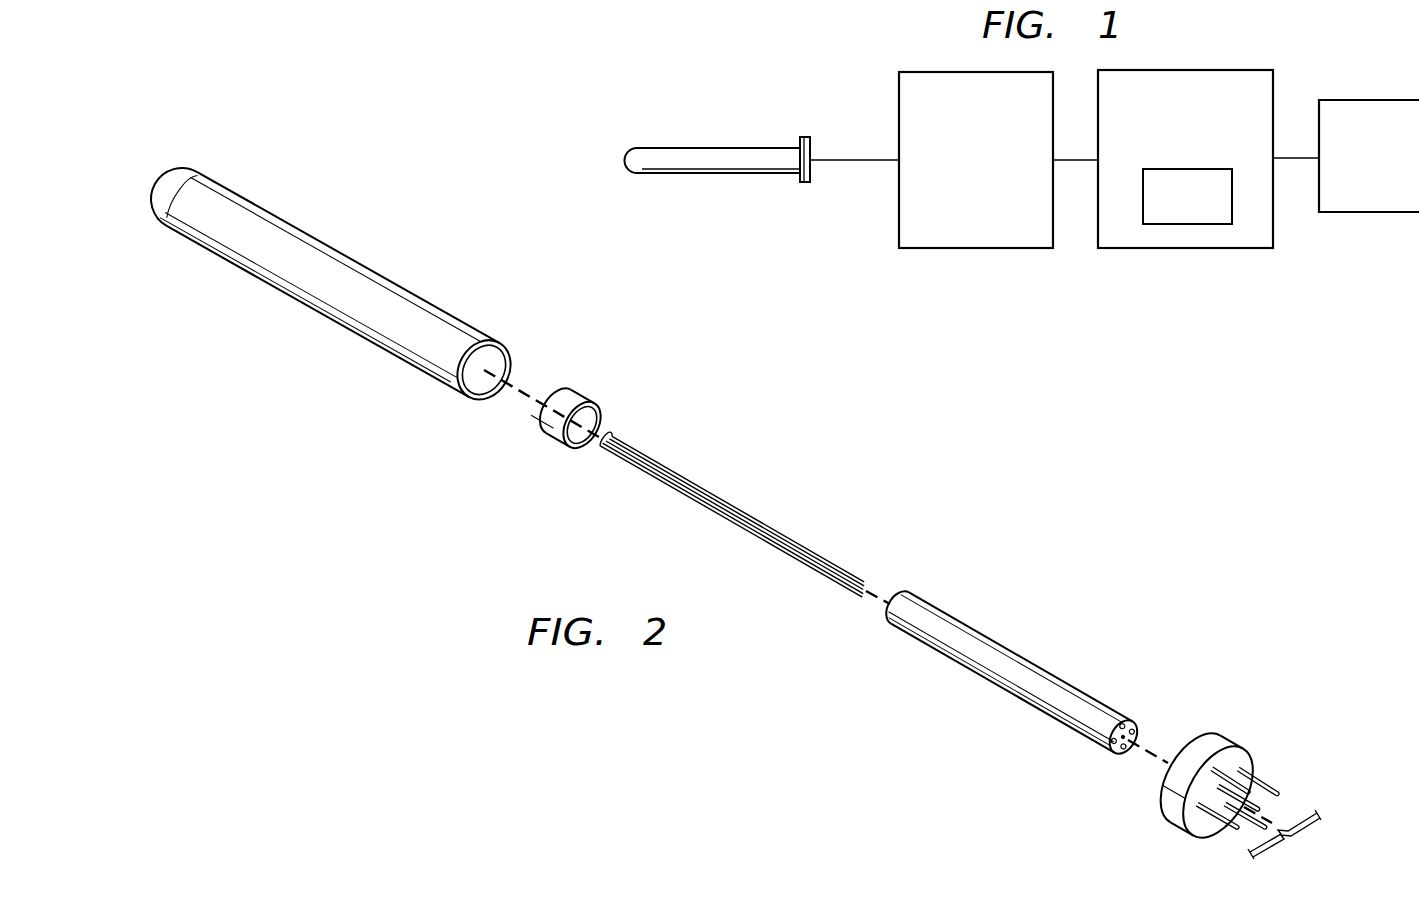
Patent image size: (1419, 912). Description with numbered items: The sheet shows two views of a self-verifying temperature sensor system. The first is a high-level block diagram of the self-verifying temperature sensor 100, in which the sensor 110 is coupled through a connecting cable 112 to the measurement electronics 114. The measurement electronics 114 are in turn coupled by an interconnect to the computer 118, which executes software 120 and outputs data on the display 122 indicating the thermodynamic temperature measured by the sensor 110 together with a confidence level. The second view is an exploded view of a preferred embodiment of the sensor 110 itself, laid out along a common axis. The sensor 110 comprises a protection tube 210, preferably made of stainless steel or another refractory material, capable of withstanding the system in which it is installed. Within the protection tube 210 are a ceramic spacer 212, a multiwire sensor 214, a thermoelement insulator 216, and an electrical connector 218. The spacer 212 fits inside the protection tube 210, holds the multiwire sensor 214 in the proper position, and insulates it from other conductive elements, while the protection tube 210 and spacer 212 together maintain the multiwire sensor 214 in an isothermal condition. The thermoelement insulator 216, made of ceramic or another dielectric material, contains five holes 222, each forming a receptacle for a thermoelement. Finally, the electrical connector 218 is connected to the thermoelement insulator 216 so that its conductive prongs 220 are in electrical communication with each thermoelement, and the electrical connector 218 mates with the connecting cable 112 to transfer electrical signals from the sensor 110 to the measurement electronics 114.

In FIG. 1, the self-verifying temperature sensor 100 is at (790, 48).
In FIG. 1, the sensor 110 is at (678, 174).
In FIG. 2, the sensor 110 is at (440, 528).
In FIG. 1, the connecting cable 112 is at (850, 160).
In FIG. 1, the measurement electronics 114 is at (955, 204).
In FIG. 1, the computer 118 is at (1165, 146).
In FIG. 1, the software 120 is at (1167, 206).
In FIG. 1, the display 122 is at (1353, 187).
In FIG. 2, the protection tube 210 is at (340, 253).
In FIG. 2, the spacer 212 is at (576, 392).
In FIG. 2, the multiwire sensor 214 is at (652, 455).
In FIG. 2, the thermoelement insulator 216 is at (1048, 668).
In FIG. 2, the electrical connector 218 is at (1228, 738).
In FIG. 2, the conductive prongs 220 is at (1286, 841).
In FIG. 2, the holes 222 is at (1134, 717).